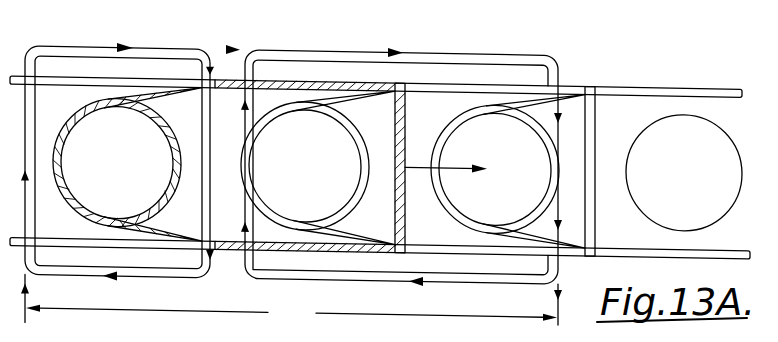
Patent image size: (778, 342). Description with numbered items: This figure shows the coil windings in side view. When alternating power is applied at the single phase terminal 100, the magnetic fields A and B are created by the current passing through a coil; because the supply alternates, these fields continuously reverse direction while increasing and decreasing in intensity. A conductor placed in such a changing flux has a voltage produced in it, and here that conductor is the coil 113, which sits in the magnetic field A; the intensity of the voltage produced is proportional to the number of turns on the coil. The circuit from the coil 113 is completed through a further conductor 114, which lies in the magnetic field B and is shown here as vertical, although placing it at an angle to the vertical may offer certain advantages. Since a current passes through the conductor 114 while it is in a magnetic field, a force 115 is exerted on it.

The single phase terminal 100 is at (291, 303).
The coil 113 is at (82, 106).
The conductor 114 is at (413, 100).
The force 115 is at (458, 159).
The magnetic field A is at (148, 64).
The magnetic field B is at (462, 64).